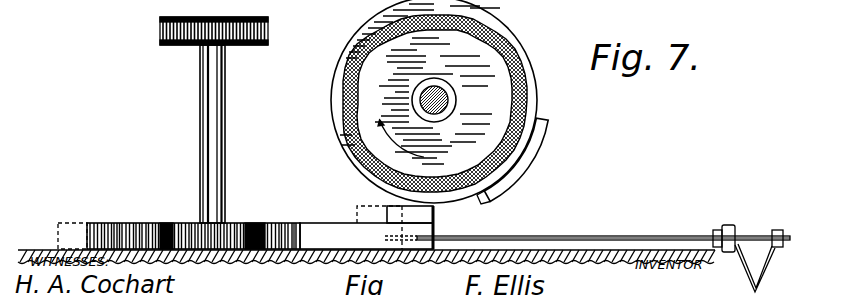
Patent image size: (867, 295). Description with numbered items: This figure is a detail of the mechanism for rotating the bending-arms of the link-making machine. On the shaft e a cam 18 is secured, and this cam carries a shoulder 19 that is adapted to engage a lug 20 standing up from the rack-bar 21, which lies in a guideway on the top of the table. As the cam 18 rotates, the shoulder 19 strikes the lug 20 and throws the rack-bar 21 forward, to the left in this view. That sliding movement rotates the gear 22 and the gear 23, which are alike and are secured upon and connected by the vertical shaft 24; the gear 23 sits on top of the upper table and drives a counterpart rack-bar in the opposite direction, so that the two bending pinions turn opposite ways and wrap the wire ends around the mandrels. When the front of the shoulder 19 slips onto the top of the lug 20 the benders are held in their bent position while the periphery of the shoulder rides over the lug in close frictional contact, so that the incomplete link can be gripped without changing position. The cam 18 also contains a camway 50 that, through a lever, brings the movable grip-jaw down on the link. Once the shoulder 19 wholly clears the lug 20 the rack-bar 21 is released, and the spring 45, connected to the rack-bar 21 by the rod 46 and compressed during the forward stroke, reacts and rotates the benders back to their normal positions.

The cam 18 is at (439, 101).
The shoulder 19 is at (522, 161).
The lug 20 is at (408, 227).
The rack-bar 21 is at (366, 236).
The gear 22 is at (179, 225).
The gear 23 is at (214, 41).
The vertical shaft 24 is at (223, 134).
The spring 45 is at (755, 268).
The rod 46 is at (587, 235).
The camway 50 is at (435, 103).
The shaft e is at (457, 100).